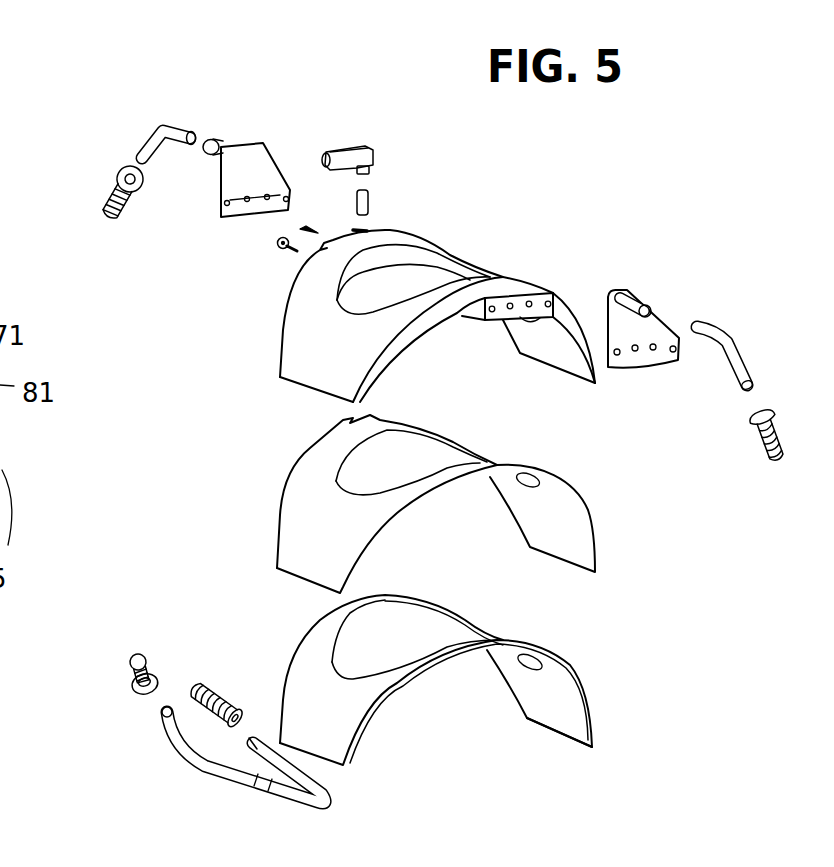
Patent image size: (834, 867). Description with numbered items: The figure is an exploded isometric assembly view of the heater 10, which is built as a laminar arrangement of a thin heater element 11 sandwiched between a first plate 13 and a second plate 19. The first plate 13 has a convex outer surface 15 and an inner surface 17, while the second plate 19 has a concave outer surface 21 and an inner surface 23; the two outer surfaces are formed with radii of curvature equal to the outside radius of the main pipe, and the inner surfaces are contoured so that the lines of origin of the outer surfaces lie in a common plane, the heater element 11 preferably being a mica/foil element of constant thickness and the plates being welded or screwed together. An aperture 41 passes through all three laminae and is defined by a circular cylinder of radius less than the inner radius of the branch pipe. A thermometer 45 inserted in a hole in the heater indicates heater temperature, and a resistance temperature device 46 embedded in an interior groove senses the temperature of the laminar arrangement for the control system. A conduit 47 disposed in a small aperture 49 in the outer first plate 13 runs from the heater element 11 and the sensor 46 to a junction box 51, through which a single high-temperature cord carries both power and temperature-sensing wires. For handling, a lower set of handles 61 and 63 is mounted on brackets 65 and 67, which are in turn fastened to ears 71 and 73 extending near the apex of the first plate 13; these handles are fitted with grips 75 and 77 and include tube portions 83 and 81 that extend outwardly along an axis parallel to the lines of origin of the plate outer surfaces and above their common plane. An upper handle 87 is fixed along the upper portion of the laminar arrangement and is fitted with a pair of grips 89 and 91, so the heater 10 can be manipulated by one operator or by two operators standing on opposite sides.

The heater 10 is at (238, 488).
The heater element 11 is at (597, 550).
The first plate 13 is at (563, 310).
The convex outer surface 15 is at (503, 283).
The inner surface 17 is at (567, 353).
The second plate 19 is at (367, 740).
The concave outer surface 21 is at (553, 717).
The inner surface 23 is at (310, 653).
The aperture 41 is at (390, 289).
The thermometer 45 is at (283, 250).
The resistance temperature device 46 is at (305, 229).
The conduit 47 is at (370, 198).
The small aperture 49 is at (362, 231).
The junction box 51 is at (370, 147).
The handle 61 is at (150, 135).
The handle 63 is at (742, 352).
The bracket 65 is at (658, 330).
The bracket 67 is at (257, 173).
The ear 71 is at (502, 312).
The ear 73 is at (352, 238).
The grip 75 is at (762, 450).
The grip 77 is at (112, 178).
The tube portion 81 is at (633, 303).
The tube portion 83 is at (217, 137).
The upper handle 87 is at (230, 780).
The grip 89 is at (210, 717).
The grip 91 is at (127, 660).